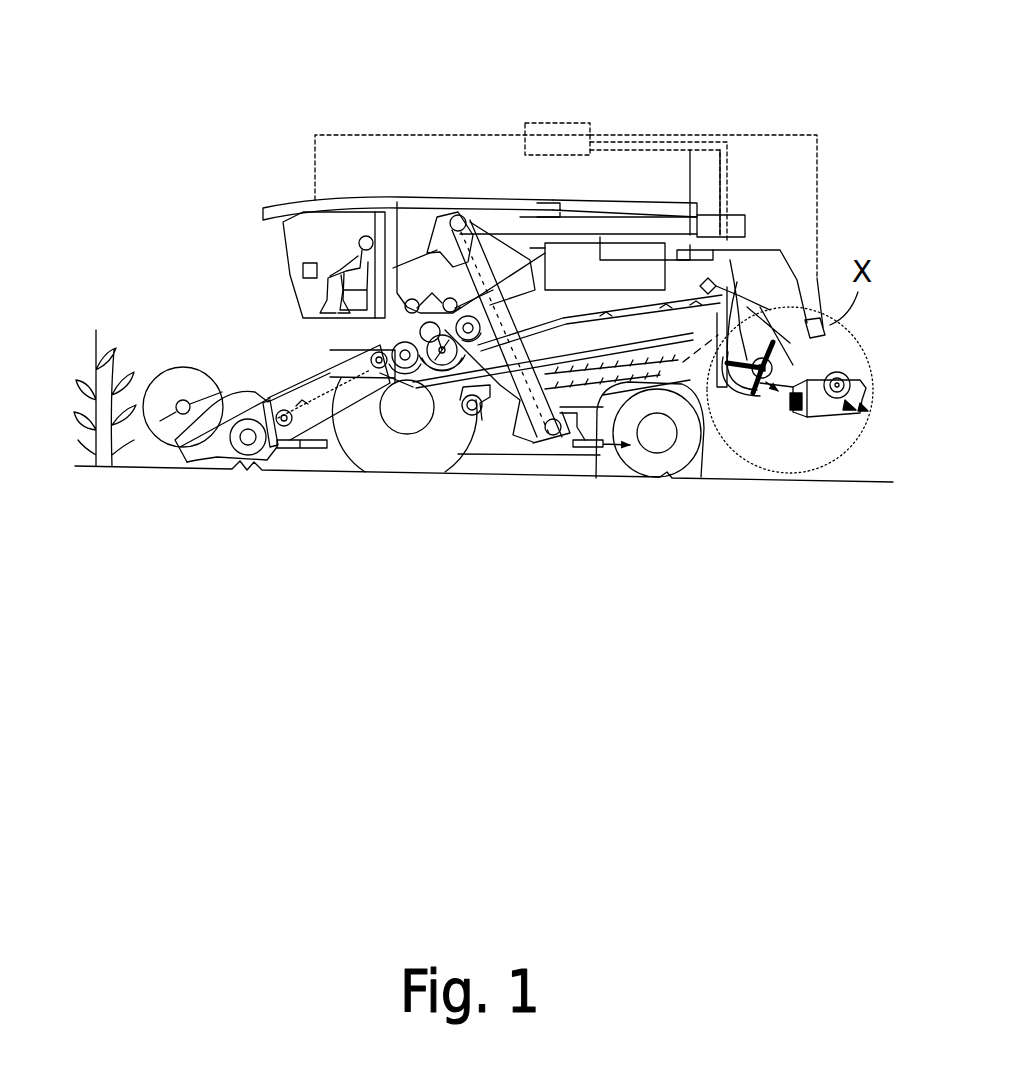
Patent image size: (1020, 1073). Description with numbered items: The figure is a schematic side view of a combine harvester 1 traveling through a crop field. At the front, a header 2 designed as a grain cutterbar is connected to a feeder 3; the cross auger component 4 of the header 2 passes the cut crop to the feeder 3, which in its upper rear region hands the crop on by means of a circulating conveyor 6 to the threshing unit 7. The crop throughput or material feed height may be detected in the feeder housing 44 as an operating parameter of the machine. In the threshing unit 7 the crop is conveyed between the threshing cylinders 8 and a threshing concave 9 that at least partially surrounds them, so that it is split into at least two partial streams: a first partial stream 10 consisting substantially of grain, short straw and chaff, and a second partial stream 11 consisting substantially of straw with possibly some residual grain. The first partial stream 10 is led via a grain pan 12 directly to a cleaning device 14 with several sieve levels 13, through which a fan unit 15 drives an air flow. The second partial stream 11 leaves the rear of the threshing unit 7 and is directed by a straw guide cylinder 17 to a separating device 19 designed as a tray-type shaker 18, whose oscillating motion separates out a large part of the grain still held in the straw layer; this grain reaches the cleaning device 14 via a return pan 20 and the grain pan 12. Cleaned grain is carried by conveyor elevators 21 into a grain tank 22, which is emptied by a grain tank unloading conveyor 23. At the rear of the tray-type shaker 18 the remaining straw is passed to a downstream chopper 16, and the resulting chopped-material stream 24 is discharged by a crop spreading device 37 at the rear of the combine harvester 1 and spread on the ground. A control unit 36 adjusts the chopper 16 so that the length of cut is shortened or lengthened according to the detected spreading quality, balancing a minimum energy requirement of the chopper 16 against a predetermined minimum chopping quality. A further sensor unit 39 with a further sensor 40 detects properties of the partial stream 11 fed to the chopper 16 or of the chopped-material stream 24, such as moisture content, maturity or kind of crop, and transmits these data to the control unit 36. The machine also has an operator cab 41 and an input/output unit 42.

The combine harvester 1 is at (247, 106).
The header 2 is at (186, 356).
The feeder 3 is at (305, 370).
The cross auger component 4 is at (264, 448).
The circulating conveyor 6 is at (327, 450).
The threshing unit 7 is at (406, 340).
The threshing cylinders 8 is at (433, 338).
The threshing concave 9 is at (408, 420).
The first partial stream 10 is at (513, 433).
The second partial stream 11 is at (680, 227).
The grain pan 12 is at (469, 417).
The sieve levels 13 is at (681, 398).
The cleaning device 14 is at (631, 400).
The fan unit 15 is at (481, 405).
The chopper 16 is at (759, 418).
The straw guide cylinder 17 is at (456, 214).
The tray-type shaker 18 is at (601, 318).
The separating device 19 is at (587, 300).
The return pan 20 is at (598, 448).
The conveyor elevators 21 is at (444, 335).
The grain tank 22 is at (508, 247).
The grain tank unloading conveyor 23 is at (690, 208).
The chopped-material stream 24 is at (789, 425).
The control unit 36 is at (567, 132).
The crop spreading device 37 is at (829, 432).
The further sensor unit 39 is at (712, 278).
The further sensor 40 is at (745, 283).
The cab 41 is at (352, 252).
The input/output unit 42 is at (303, 270).
The feeder housing 44 is at (801, 287).